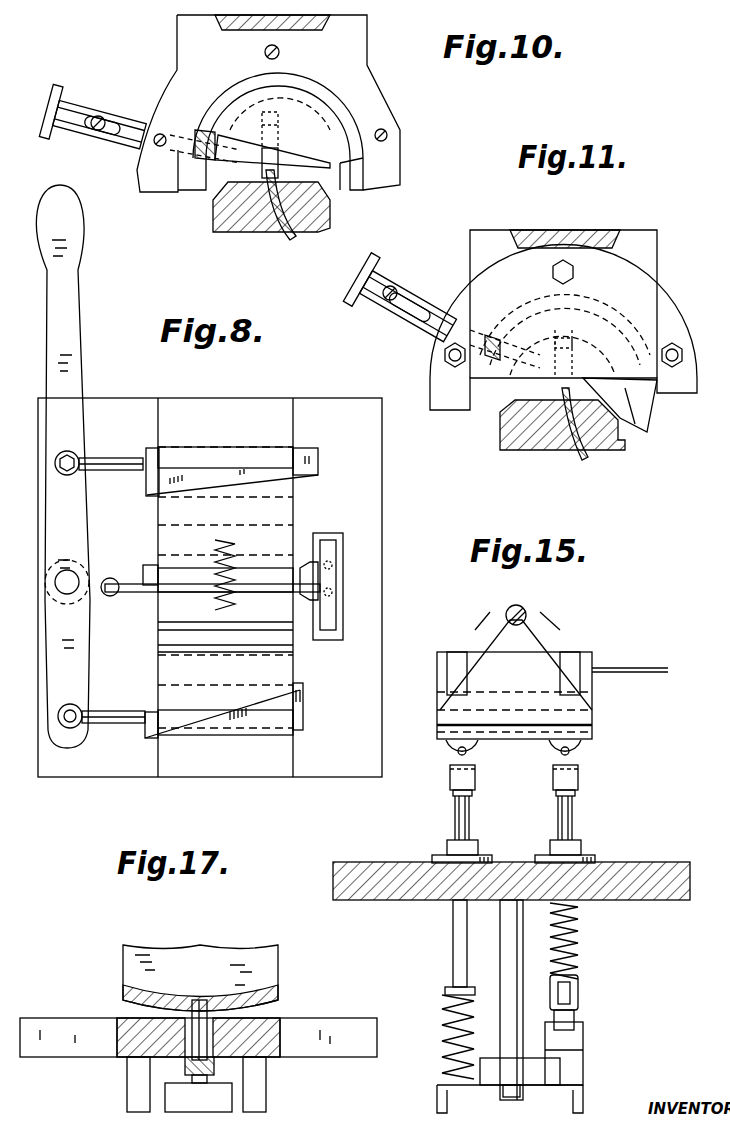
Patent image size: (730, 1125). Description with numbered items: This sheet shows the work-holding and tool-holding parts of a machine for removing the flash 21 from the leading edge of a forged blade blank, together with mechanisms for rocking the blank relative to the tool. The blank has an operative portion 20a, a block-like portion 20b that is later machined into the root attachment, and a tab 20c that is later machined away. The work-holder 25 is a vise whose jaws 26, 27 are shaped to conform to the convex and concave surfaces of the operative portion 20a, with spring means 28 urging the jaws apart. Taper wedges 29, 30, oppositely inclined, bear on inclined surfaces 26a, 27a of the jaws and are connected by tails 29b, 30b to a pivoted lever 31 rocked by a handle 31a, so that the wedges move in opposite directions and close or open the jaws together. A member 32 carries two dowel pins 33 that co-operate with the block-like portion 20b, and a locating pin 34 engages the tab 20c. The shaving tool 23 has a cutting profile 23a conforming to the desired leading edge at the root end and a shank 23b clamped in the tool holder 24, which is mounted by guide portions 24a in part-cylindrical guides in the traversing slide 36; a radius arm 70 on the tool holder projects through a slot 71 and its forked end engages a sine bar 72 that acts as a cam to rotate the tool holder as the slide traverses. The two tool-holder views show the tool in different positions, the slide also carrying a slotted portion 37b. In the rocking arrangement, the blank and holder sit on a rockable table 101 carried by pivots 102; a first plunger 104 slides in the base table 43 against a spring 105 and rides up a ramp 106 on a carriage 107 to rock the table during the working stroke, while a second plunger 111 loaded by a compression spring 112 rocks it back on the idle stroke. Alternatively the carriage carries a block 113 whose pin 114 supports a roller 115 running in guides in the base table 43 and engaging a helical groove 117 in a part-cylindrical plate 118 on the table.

In FIG. 10, the operative portion of the blade 20a is at (263, 220).
In FIG. 11, the operative portion of the blade 20a is at (552, 433).
In FIG. 8, the operative portion of the blade 20a is at (150, 568).
In FIG. 8, the block-like portion 20b is at (336, 600).
In FIG. 8, the tab 20c is at (112, 578).
In FIG. 8, the flash 21 is at (366, 440).
In FIG. 10, the tool 23 is at (267, 162).
In FIG. 11, the tool 23 is at (587, 377).
In FIG. 10, the cutting profile 23a is at (330, 165).
In FIG. 11, the cutting profile 23a is at (560, 393).
In FIG. 10, the shank 23b is at (303, 112).
In FIG. 11, the shank 23b is at (617, 274).
In FIG. 10, the tool holder 24 is at (300, 99).
In FIG. 11, the tool holder 24 is at (632, 408).
In FIG. 10, the guide portions 24a is at (362, 150).
In FIG. 11, the guide portions 24a is at (653, 405).
In FIG. 8, the work-holder 25 is at (303, 438).
In FIG. 15, the work-holder 25 is at (453, 650).
In FIG. 10, the vise jaw 26 is at (376, 117).
In FIG. 11, the vise jaw 26 is at (512, 451).
In FIG. 8, the vise jaw 26 is at (173, 607).
In FIG. 8, the inclined surface 26a is at (248, 686).
In FIG. 10, the vise jaw 27 is at (310, 218).
In FIG. 11, the vise jaw 27 is at (600, 432).
In FIG. 8, the vise jaw 27 is at (185, 550).
In FIG. 8, the inclined surface 27a is at (274, 475).
In FIG. 8, the spring means 28 is at (233, 598).
In FIG. 8, the taper wedge 29 is at (297, 695).
In FIG. 8, the tail 29b is at (102, 723).
In FIG. 8, the taper wedge 30 is at (318, 460).
In FIG. 8, the tail 30b is at (115, 458).
In FIG. 8, the pivoted lever 31 is at (70, 694).
In FIG. 8, the handle 31a is at (75, 252).
In FIG. 8, the member 32 is at (336, 542).
In FIG. 8, the dowel pins 33 is at (345, 563).
In FIG. 8, the locating pin 34 is at (110, 596).
In FIG. 11, the traversing slide 36 is at (645, 262).
In FIG. 10, the top slot 37b is at (332, 18).
In FIG. 11, the top slot 37b is at (553, 231).
In FIG. 15, the base table 43 is at (410, 860).
In FIG. 17, the base table 43 is at (312, 1025).
In FIG. 10, the radius arm 70 is at (118, 112).
In FIG. 11, the radius arm 70 is at (417, 322).
In FIG. 10, the slot 71 is at (180, 90).
In FIG. 11, the slot 71 is at (466, 298).
In FIG. 10, the sine bar 72 is at (95, 107).
In FIG. 11, the sine bar 72 is at (393, 288).
In FIG. 15, the rockable table 101 is at (537, 673).
In FIG. 15, the pivots 102 is at (522, 607).
In FIG. 15, the first plunger 104 is at (573, 802).
In FIG. 15, the spring 105 is at (577, 940).
In FIG. 15, the ramp 106 is at (578, 1013).
In FIG. 15, the carriage 107 is at (572, 1070).
In FIG. 15, the second plunger 111 is at (453, 930).
In FIG. 15, the compression spring 112 is at (442, 1027).
In FIG. 17, the block 113 is at (165, 1095).
In FIG. 17, the pin 114 is at (195, 1000).
In FIG. 17, the roller 115 is at (263, 1058).
In FIG. 17, the helical groove 117 is at (247, 990).
In FIG. 17, the part-cylindrical plate 118 is at (128, 993).